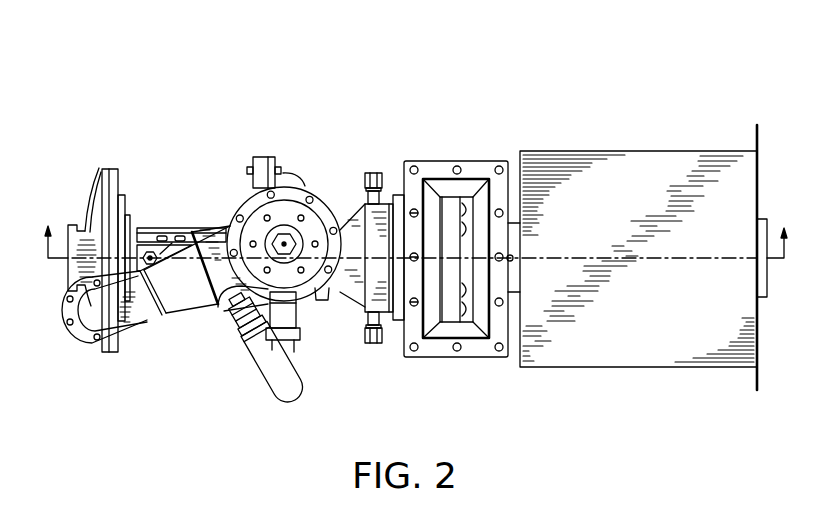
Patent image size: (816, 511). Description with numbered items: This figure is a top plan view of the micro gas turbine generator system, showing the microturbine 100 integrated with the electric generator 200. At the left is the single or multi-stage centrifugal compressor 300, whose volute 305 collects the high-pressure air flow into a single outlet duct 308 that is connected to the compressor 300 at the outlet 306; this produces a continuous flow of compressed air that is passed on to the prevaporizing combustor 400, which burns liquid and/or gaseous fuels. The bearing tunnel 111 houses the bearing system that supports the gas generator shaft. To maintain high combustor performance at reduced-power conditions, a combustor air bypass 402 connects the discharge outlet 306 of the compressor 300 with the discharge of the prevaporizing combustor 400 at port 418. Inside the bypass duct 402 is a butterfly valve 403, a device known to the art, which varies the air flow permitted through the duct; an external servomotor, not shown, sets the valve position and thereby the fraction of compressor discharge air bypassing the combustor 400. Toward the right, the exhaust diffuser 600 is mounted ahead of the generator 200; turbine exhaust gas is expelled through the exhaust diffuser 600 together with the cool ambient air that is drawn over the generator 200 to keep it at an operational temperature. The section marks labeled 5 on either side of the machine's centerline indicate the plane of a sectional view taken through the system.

The microturbine 100 is at (150, 86).
The electric generator 200 is at (591, 150).
The compressor 300 is at (84, 212).
The volute 305 is at (98, 175).
The bearing tunnel 111 is at (154, 246).
The prevaporizing combustor 400 is at (236, 206).
The compressor outlet 306 is at (220, 308).
The outlet duct 308 is at (135, 311).
The butterfly valve 403 is at (232, 338).
The combustor air bypass 402 is at (268, 387).
The port 418 is at (300, 298).
The exhaust diffuser 600 is at (438, 353).
The section line 5- 5 is at (416, 233).